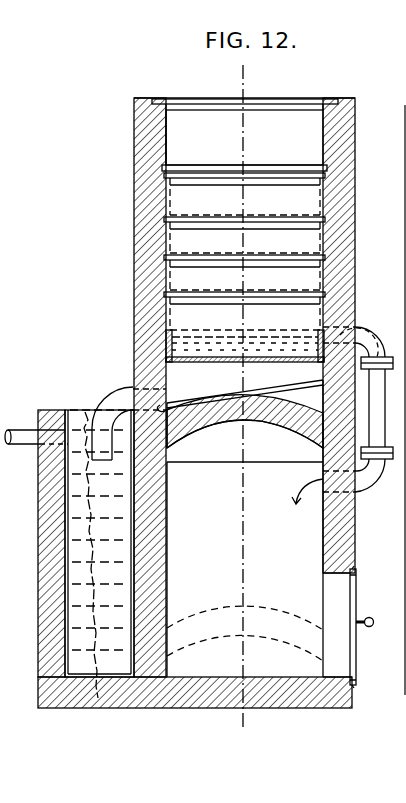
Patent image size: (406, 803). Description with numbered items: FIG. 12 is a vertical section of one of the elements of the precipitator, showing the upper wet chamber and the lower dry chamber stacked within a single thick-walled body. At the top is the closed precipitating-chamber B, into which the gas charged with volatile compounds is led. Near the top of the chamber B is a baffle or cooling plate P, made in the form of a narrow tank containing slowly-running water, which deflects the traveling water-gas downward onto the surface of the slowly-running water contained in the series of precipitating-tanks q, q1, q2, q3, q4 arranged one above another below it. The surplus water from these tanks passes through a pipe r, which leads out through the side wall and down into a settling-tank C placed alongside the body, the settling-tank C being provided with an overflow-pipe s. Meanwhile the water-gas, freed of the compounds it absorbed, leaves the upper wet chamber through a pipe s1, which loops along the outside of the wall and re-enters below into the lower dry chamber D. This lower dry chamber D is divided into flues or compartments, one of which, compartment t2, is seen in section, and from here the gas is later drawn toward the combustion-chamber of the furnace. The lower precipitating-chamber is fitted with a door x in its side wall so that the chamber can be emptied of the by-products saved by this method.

The closed precipitating-chamber B is at (244, 140).
The baffle or cooling plate P is at (188, 137).
The precipitating-tank q is at (244, 194).
The precipitating-tank q1 is at (244, 235).
The precipitating-tank q2 is at (244, 272).
The precipitating-tank q3 is at (244, 311).
The precipitating-tank q4 is at (245, 346).
The lower dry chamber D is at (245, 441).
The flue or compartment t2 is at (245, 562).
The pipe s1 is at (342, 416).
The door x is at (360, 607).
The settling-tank C is at (99, 554).
The overflow-pipe s is at (16, 420).
The pipe r is at (129, 420).